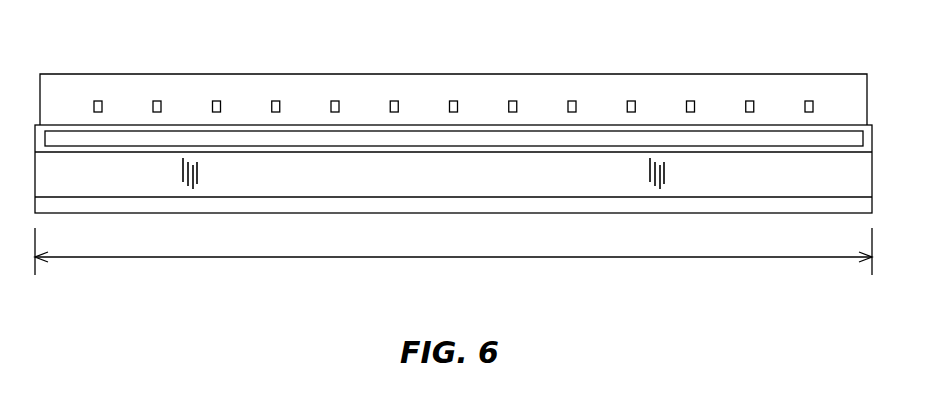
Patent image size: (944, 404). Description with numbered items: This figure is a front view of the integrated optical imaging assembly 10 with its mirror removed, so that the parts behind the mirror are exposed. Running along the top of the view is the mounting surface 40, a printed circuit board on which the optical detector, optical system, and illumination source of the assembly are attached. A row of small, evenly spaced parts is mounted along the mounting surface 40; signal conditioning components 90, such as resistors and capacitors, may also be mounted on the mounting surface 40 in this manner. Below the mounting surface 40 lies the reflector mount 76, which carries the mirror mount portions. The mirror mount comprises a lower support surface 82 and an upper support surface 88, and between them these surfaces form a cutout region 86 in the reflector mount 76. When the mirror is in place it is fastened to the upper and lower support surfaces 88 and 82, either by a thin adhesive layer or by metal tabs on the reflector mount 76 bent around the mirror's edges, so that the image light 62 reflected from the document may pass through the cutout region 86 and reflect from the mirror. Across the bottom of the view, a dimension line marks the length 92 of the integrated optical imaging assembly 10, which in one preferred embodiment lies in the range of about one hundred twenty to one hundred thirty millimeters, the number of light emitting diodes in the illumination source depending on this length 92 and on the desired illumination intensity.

The integrated optical imaging assembly 10 is at (243, 55).
The mounting surface 40 is at (176, 74).
The image light 62 is at (155, 213).
The reflector mount 76 is at (455, 186).
The lower support surface 82 is at (692, 147).
The cutout region 86 is at (740, 138).
The upper support surface 88 is at (779, 128).
The signal conditioning components 90 is at (832, 107).
The length 92 is at (512, 257).